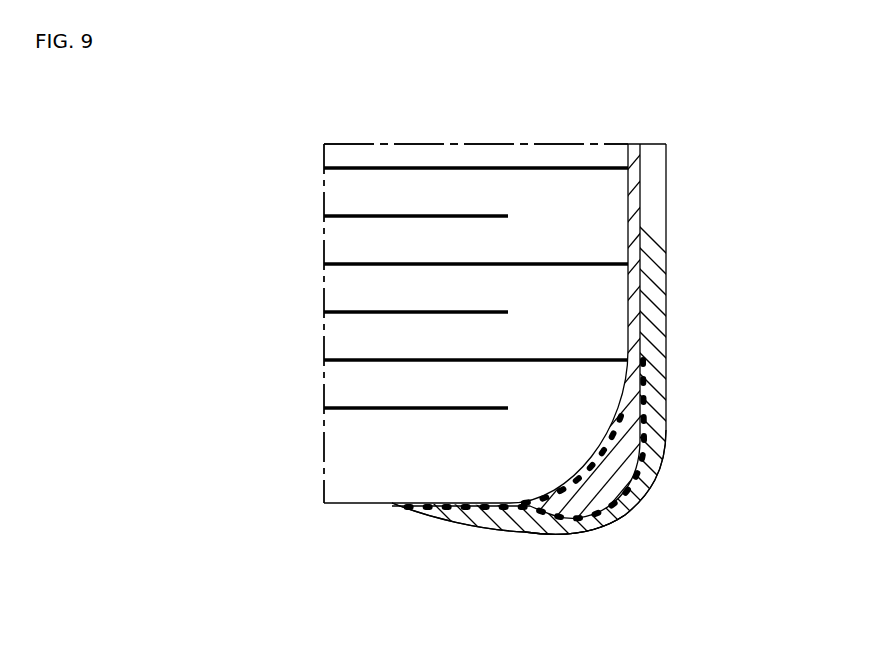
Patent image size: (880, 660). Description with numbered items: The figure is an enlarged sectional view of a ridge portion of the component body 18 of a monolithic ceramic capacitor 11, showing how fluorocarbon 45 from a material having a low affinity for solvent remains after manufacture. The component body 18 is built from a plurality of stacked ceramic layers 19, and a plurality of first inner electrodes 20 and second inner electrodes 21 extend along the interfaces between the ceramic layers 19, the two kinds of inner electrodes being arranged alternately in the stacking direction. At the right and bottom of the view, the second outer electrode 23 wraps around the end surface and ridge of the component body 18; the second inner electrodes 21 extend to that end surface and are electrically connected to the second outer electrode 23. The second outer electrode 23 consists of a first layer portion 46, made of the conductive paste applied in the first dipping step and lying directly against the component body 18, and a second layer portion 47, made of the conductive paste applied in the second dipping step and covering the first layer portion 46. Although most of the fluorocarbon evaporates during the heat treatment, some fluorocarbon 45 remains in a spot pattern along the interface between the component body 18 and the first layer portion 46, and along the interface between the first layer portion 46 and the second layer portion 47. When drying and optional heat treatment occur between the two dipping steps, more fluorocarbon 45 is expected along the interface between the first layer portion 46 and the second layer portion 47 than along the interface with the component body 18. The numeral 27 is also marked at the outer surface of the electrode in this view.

The monolithic ceramic capacitor 11 is at (316, 85).
The component body 18 is at (597, 145).
The ceramic layers 19 is at (337, 336).
The first inner electrodes 20 is at (445, 312).
The second inner electrodes 21 is at (483, 264).
The second outer electrode 23 is at (470, 345).
The first layer portion 46 is at (638, 417).
The second layer portion 47 is at (763, 425).
The outer surface of external electrode 27 is at (637, 499).
The fluorocarbon 45 is at (613, 517).